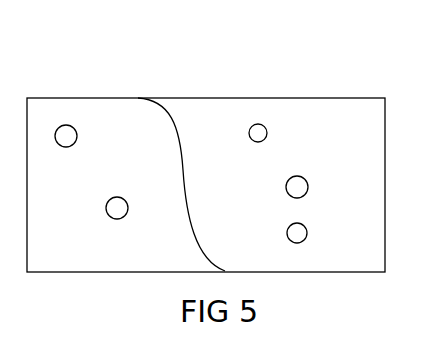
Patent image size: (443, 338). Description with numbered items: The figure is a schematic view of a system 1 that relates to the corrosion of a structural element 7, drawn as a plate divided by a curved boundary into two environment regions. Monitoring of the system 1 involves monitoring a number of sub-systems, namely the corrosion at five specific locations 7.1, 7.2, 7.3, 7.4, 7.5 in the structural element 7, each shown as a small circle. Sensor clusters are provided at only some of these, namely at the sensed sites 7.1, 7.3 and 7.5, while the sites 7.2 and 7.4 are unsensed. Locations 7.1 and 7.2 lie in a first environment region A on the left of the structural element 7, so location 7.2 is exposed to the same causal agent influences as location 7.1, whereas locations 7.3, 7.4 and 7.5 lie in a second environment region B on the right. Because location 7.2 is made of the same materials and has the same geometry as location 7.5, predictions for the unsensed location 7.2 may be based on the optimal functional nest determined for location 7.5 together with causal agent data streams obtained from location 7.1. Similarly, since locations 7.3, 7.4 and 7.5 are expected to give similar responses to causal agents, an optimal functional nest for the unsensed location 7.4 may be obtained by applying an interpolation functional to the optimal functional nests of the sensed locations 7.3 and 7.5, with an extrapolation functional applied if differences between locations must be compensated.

The system 1 is at (229, 165).
The structural element 7 is at (354, 108).
The location 7.1 is at (75, 142).
The location 7.2 is at (107, 214).
The location 7.3 is at (264, 128).
The location 7.4 is at (305, 179).
The location 7.5 is at (307, 233).
The first environment region A is at (100, 255).
The second environment region B is at (365, 202).